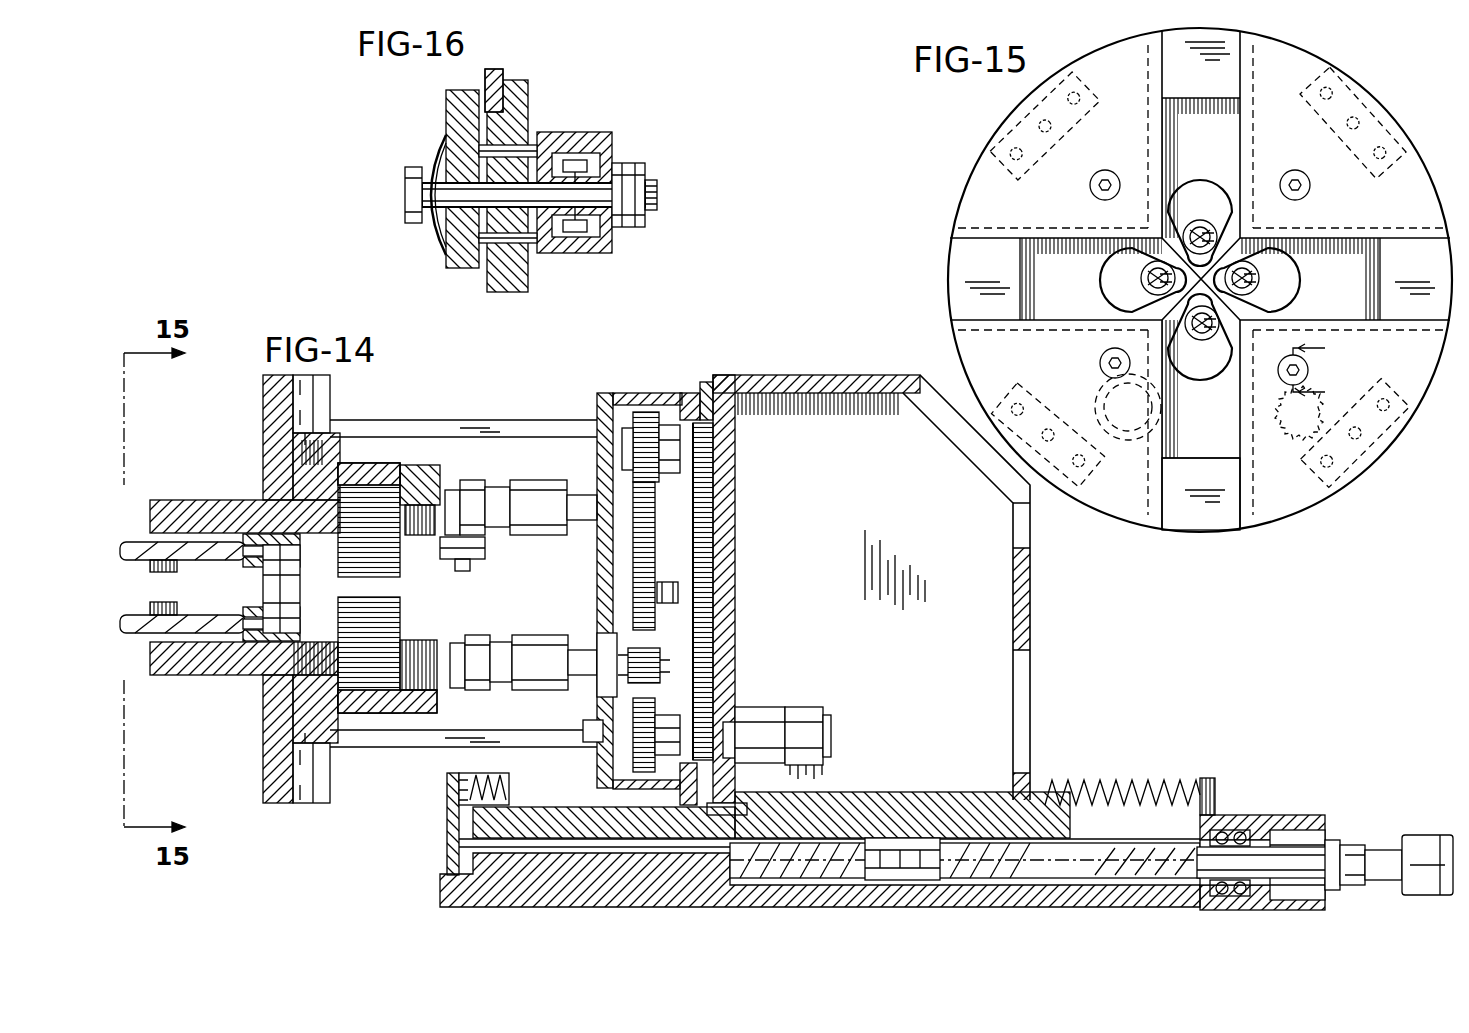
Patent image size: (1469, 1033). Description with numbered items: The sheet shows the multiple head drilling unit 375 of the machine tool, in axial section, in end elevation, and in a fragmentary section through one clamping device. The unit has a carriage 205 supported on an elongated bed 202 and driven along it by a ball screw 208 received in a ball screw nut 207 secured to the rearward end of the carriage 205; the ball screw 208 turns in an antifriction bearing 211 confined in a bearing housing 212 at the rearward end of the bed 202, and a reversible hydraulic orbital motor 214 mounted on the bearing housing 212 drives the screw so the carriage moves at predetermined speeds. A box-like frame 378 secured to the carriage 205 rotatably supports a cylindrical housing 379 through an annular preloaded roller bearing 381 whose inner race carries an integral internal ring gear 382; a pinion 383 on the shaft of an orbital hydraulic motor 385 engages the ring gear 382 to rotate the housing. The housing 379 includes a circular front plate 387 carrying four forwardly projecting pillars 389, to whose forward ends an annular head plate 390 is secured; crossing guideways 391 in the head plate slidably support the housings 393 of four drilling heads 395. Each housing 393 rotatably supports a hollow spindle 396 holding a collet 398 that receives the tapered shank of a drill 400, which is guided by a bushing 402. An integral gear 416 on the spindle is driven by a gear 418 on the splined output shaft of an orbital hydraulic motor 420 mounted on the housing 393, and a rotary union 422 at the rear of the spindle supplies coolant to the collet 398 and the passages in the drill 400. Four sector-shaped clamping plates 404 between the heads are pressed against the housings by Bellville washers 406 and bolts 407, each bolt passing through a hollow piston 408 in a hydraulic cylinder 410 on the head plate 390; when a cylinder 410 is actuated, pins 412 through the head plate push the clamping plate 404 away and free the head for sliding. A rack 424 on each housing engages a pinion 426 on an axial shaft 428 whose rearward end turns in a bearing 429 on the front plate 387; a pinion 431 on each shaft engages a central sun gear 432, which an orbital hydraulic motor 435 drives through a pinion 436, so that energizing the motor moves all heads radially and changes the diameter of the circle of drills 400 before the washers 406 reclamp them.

In FIG. 14, the base or bed 202 is at (780, 905).
In FIG. 14, the carriage 205 is at (455, 830).
In FIG. 14, the ball screw nut 207 is at (920, 888).
In FIG. 14, the ball screw 208 is at (1152, 852).
In FIG. 14, the antifriction bearing 211 is at (1243, 828).
In FIG. 14, the bearing housing 212 is at (1310, 815).
In FIG. 14, the reversible hydraulic orbital motor 214 is at (1420, 835).
In FIG. 14, the multiple head drilling unit 375 is at (680, 366).
In FIG. 14, the box-like housing or frame 378 is at (800, 375).
In FIG. 14, the cylindrical housing 379 is at (633, 393).
In FIG. 14, the annular preloaded antifriction roller bearing 381 is at (706, 382).
In FIG. 14, the internal ring gear 382 is at (713, 458).
In FIG. 14, the pinion 383 is at (750, 720).
In FIG. 14, the orbital hydraulic motor 385 is at (800, 712).
In FIG. 14, the circular front plate 387 is at (597, 412).
In FIG. 15, the pillars 389 is at (1020, 100).
In FIG. 14, the pillars 389 is at (502, 420).
In FIG. 16, the annular head plate 390 is at (514, 82).
In FIG. 14, the annular head plate 390 is at (320, 790).
In FIG. 15, the crossing guideways 391 is at (1145, 512).
In FIG. 14, the crossing guideways 391 is at (304, 798).
In FIG. 16, the housing 393 is at (491, 74).
In FIG. 14, the housing 393 is at (182, 500).
In FIG. 15, the drilling heads 395 is at (1166, 221).
In FIG. 14, the drilling heads 395 is at (212, 495).
In FIG. 14, the hollow spindle 396 is at (290, 603).
In FIG. 14, the collet 398 is at (275, 536).
In FIG. 15, the drill 400 is at (1140, 278).
In FIG. 14, the drill 400 is at (135, 545).
In FIG. 14, the bushing 402 is at (172, 604).
In FIG. 16, the sector-shaped clamping plates 404 is at (462, 268).
In FIG. 15, the sector-shaped clamping plates 404 is at (1305, 62).
In FIG. 14, the sector-shaped clamping plates 404 is at (263, 778).
In FIG. 16, the Bellville washers 406 is at (432, 158).
In FIG. 15, the Bellville washers 406 is at (1090, 184).
In FIG. 16, the bolts 407 is at (626, 184).
In FIG. 16, the hollow piston 408 is at (575, 232).
In FIG. 16, the hydraulic cylinder 410 is at (620, 122).
In FIG. 16, the pins 412 is at (512, 148).
In FIG. 14, the integral gear 416 is at (420, 470).
In FIG. 14, the gear 418 is at (360, 492).
In FIG. 14, the orbital-type hydraulic motor 420 is at (500, 485).
In FIG. 14, the rotary union 422 is at (485, 550).
In FIG. 15, the rack 424 is at (1201, 494).
In FIG. 15, the pinion 426 is at (1285, 440).
In FIG. 14, the axially extending shaft 428 is at (583, 728).
In FIG. 14, the bearing 429 is at (680, 776).
In FIG. 14, the pinion 431 is at (656, 480).
In FIG. 14, the sun gear 432 is at (715, 548).
In FIG. 14, the orbital hydraulic motor 435 is at (600, 622).
In FIG. 14, the pinion 436 is at (652, 655).